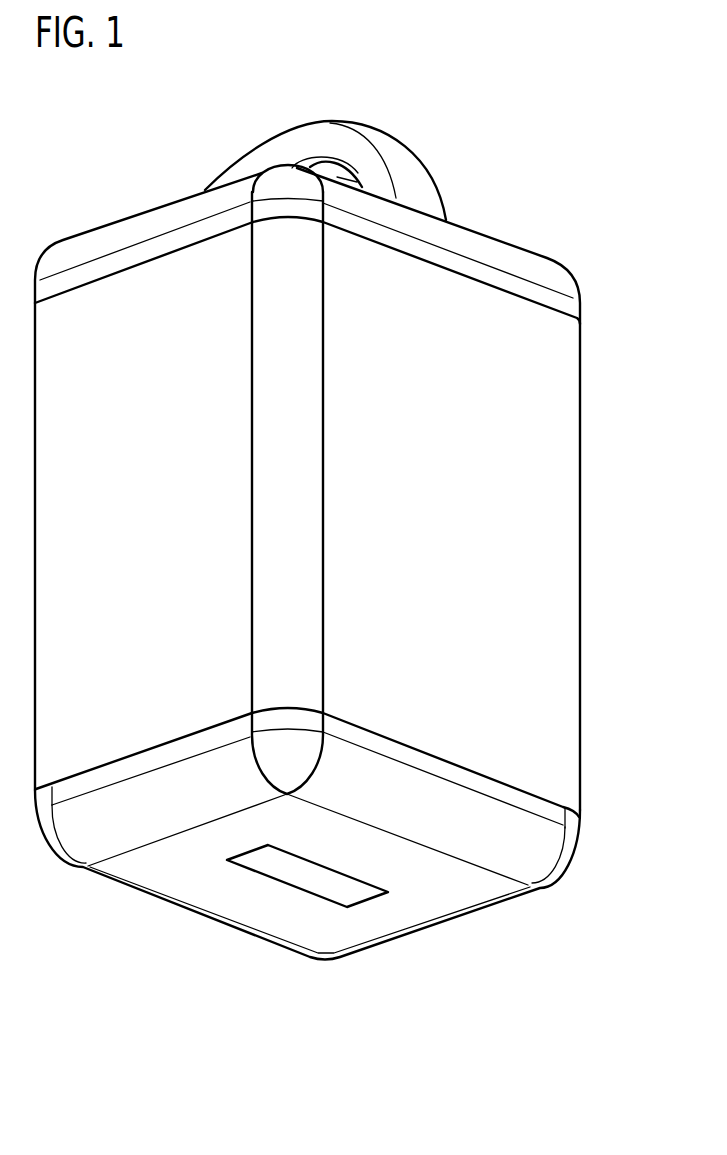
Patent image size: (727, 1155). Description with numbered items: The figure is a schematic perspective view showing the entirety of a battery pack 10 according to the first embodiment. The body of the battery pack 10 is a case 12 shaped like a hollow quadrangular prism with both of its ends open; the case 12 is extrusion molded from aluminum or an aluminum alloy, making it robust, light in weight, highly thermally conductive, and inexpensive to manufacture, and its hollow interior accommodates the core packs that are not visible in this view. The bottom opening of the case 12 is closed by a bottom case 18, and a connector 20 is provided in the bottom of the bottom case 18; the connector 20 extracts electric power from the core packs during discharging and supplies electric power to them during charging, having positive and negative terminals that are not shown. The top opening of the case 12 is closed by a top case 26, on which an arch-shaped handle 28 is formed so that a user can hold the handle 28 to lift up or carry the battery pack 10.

The battery pack 10 is at (578, 86).
The case 12 is at (565, 520).
The bottom case 18 is at (467, 895).
The connector 20 is at (355, 893).
The top case 26 is at (500, 252).
The handle 28 is at (403, 163).